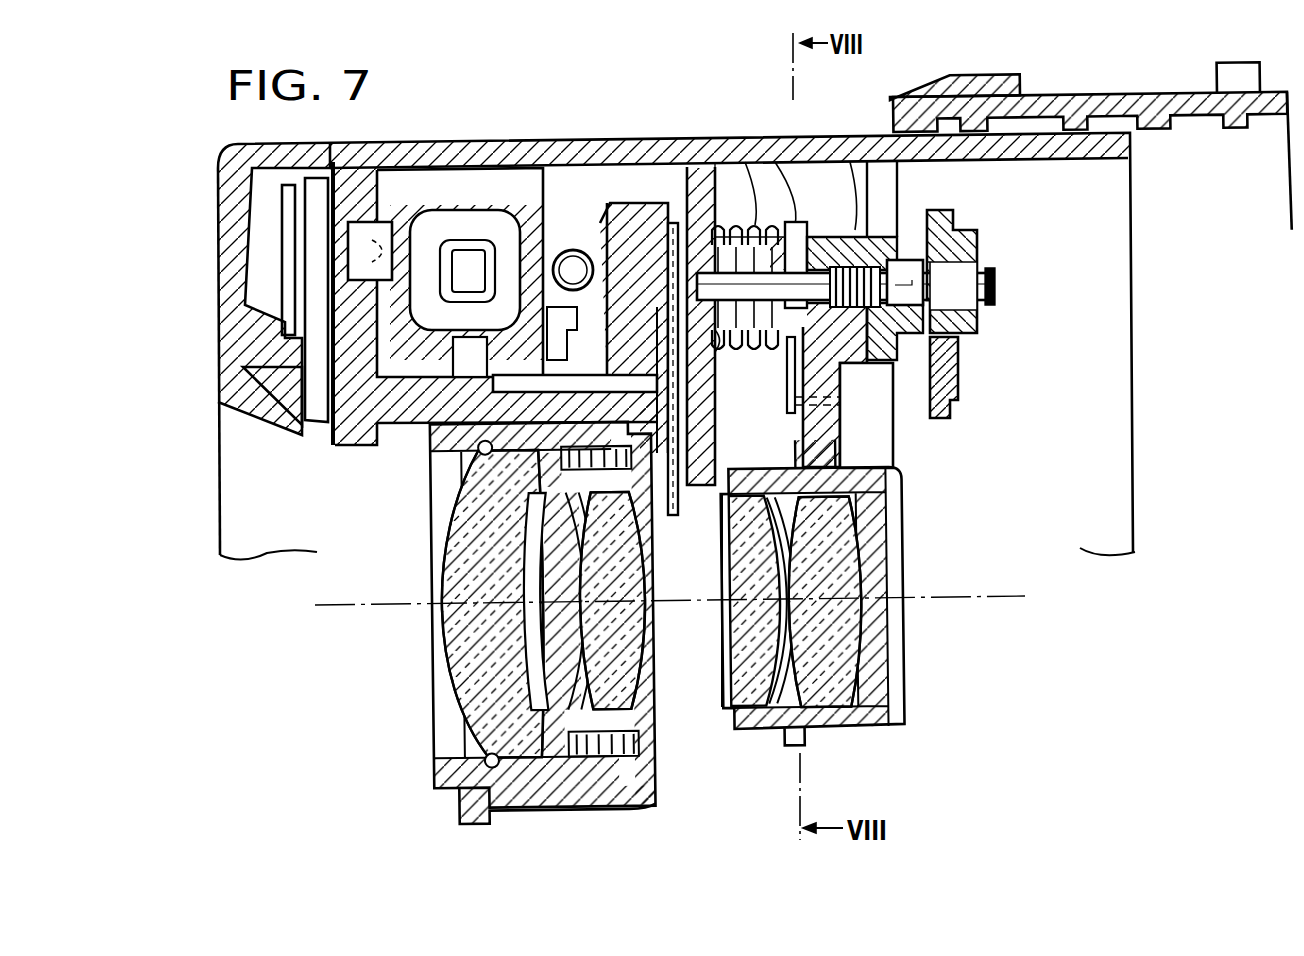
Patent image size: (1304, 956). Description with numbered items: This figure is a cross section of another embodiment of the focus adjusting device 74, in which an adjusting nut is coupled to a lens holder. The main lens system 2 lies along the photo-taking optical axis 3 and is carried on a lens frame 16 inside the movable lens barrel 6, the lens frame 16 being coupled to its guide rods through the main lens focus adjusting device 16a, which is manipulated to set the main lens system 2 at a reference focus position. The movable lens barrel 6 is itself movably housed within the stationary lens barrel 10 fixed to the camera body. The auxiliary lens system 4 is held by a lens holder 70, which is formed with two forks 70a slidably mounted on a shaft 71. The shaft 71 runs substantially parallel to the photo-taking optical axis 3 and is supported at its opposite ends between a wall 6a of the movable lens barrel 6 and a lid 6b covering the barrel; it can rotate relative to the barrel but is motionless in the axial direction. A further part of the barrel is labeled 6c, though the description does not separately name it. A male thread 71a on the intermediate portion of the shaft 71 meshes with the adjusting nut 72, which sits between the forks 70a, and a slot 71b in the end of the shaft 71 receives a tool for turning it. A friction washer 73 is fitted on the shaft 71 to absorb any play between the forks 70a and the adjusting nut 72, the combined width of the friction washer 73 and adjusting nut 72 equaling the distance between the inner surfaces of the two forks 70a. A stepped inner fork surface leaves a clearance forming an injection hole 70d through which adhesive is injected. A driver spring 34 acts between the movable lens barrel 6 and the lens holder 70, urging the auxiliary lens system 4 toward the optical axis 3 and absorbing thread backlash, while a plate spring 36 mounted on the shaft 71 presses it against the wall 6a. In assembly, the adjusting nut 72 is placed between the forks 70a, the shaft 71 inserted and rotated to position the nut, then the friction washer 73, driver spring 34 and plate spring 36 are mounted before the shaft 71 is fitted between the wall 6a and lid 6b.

The main lens system 2 is at (425, 704).
The photo-taking optical axis 3 is at (998, 598).
The auxiliary lens system 4 is at (897, 655).
The movable lens barrel 6 is at (552, 148).
The wall 6a is at (705, 492).
The lid 6b is at (960, 360).
The housing top portion 6c is at (790, 157).
The stationary lens barrel 10 is at (1088, 91).
The lens frame 16 is at (550, 808).
The main lens focus adjusting device 16a is at (528, 207).
The driver spring 34 is at (705, 200).
The plate spring 36 is at (965, 247).
The lens holder 70 is at (757, 748).
The forks 70a is at (900, 192).
The injection hole 70d is at (785, 222).
The shaft 71 is at (993, 271).
The male thread 71a is at (877, 414).
The slot 71b is at (995, 282).
The adjusting nut 72 is at (805, 235).
The friction washer 73 is at (845, 352).
The focus adjusting device 74 is at (830, 200).